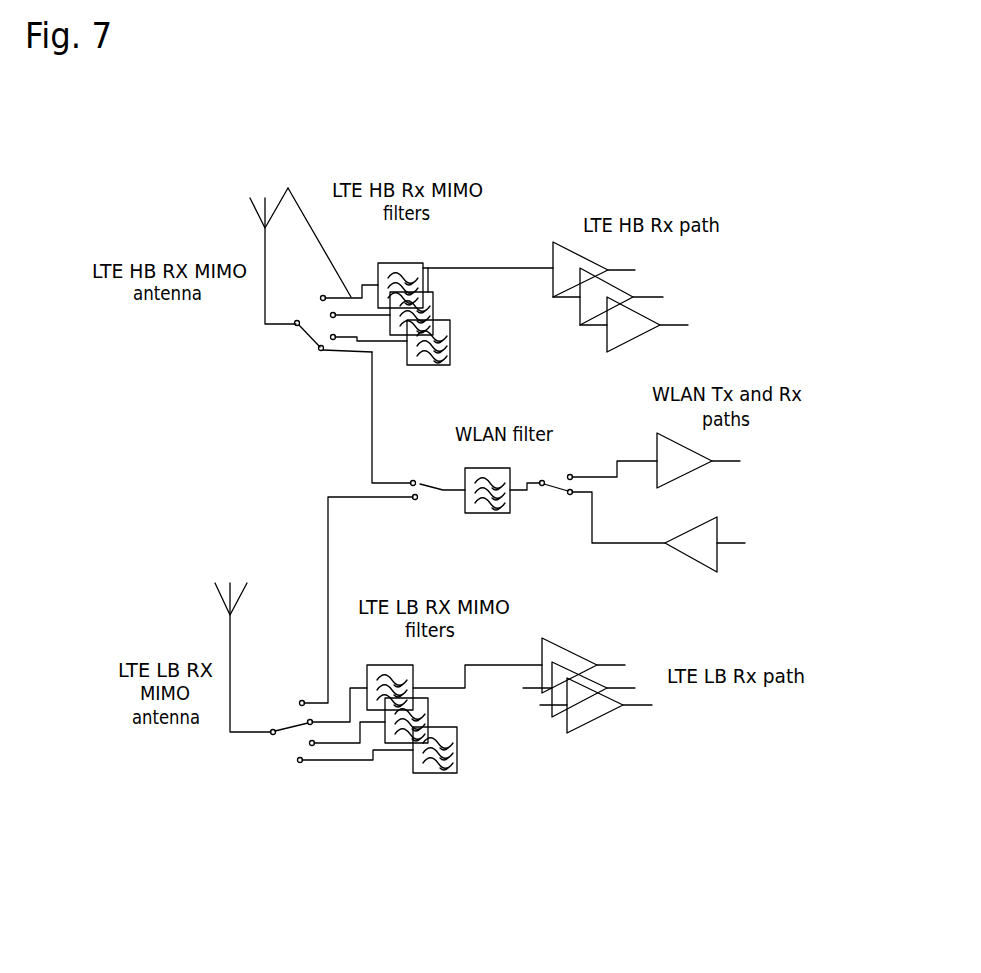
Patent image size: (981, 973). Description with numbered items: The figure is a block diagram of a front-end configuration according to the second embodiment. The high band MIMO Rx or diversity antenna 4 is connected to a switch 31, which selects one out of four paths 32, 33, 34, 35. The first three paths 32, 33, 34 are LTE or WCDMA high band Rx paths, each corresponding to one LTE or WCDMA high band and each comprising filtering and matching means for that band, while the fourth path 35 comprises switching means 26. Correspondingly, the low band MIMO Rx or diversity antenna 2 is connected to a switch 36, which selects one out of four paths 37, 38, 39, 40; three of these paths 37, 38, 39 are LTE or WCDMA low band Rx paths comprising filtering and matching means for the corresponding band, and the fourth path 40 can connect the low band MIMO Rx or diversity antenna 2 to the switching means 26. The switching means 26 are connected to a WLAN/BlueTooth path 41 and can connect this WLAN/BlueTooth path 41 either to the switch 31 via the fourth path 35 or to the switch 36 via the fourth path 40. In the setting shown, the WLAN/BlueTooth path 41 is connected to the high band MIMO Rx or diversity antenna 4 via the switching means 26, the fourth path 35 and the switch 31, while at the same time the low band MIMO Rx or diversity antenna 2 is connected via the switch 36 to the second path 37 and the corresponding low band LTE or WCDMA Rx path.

The low band MIMO Rx or diversity antenna 2 is at (230, 642).
The high band MIMO Rx or diversity antenna 4 is at (263, 250).
The switching means 26 is at (427, 486).
The switch 31 is at (306, 340).
The first path 32 is at (333, 297).
The second path 33 is at (275, 195).
The third path 34 is at (355, 338).
The fourth path 35 is at (371, 407).
The switch 36 is at (295, 727).
The second path 37 is at (337, 722).
The low band Rx path 38 is at (349, 745).
The low band Rx path 39 is at (360, 760).
The fourth path 40 is at (304, 701).
The WLAN/BlueTooth path 41 is at (513, 493).